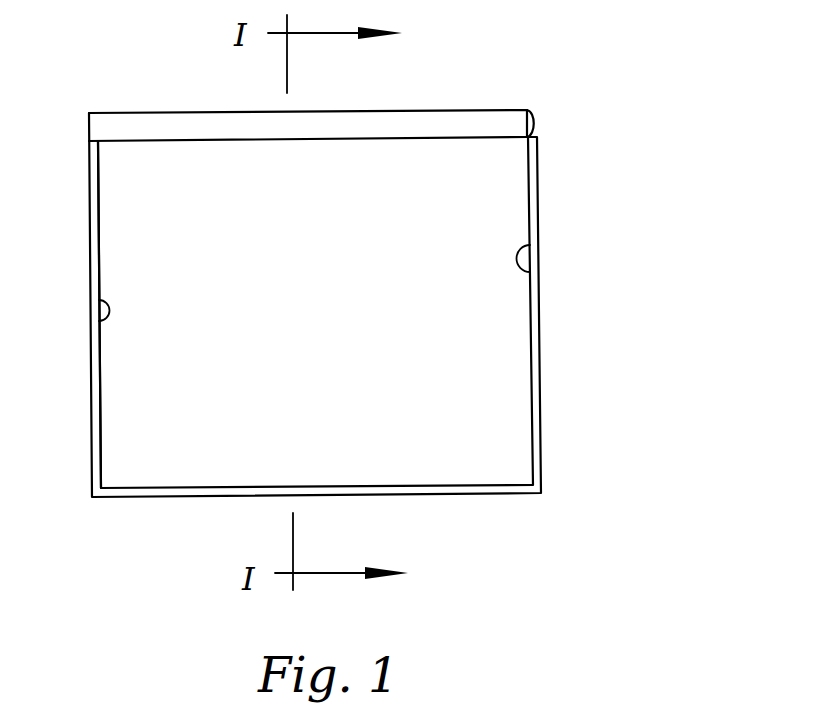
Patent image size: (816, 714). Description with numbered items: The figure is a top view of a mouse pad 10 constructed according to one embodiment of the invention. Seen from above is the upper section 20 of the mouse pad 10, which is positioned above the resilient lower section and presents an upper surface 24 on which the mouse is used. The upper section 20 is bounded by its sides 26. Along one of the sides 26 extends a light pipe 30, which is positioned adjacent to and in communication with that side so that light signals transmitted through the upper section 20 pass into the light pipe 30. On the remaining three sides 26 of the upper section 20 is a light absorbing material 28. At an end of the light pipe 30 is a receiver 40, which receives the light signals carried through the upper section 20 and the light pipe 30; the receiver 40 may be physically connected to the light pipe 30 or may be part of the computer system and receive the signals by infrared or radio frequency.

The mouse pad 10 is at (363, 296).
The upper section 20 is at (503, 350).
The upper surface 24 is at (108, 413).
The sides 26 is at (98, 322).
The light absorbing material 28 is at (96, 230).
The light pipe 30 is at (365, 122).
The receiver 40 is at (534, 120).